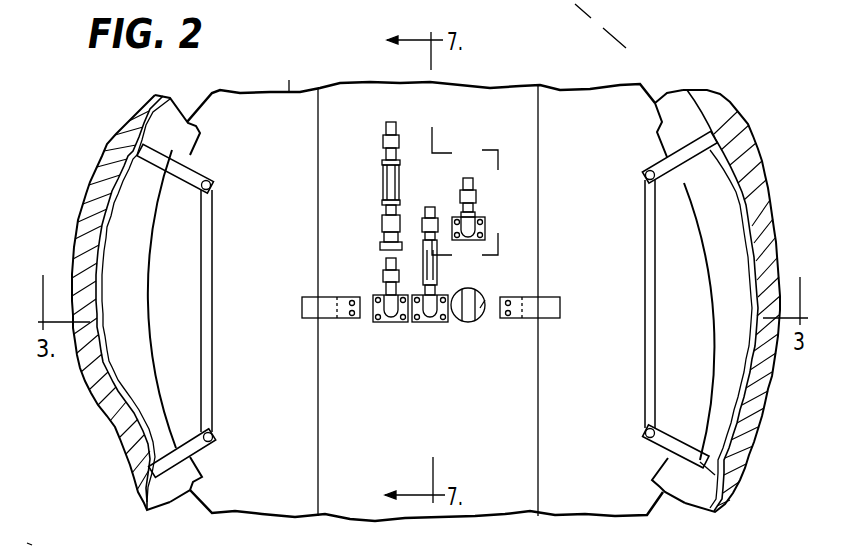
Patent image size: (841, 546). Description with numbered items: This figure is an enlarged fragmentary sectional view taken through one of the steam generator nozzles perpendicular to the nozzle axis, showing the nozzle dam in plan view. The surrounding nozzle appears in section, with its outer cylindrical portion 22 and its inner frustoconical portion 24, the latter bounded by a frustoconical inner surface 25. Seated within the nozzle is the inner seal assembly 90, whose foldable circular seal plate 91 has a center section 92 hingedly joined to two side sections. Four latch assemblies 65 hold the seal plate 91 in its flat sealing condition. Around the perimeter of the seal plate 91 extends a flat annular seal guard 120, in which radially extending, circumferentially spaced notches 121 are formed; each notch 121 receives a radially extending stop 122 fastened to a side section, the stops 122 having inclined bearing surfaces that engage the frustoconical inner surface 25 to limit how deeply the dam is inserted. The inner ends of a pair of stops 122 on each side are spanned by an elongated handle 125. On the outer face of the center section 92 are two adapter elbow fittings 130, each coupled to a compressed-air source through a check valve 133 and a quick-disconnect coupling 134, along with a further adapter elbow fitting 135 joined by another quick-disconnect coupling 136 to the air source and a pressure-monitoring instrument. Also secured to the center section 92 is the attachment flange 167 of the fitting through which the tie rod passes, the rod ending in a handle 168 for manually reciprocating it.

The outer cylindrical portion 22 is at (425, 260).
The inner frustoconical portion 24 is at (740, 138).
The frustoconical inner surface 25 is at (674, 93).
The latch assemblies 65 is at (310, 295).
The inner seal assembly 90 is at (289, 80).
The seal plate 91 is at (512, 85).
The center section 92 is at (373, 102).
The seal guard 120 is at (735, 292).
The notches 121 is at (700, 462).
The stops 122 is at (160, 160).
The handle 125 is at (210, 374).
The adapter elbow fittings 130 is at (428, 324).
The check valve 133 is at (385, 182).
The quick-disconnect coupling 134 is at (380, 245).
The adapter elbow fitting 135 is at (485, 227).
The quick-disconnect coupling 136 is at (475, 187).
The attachment flange 167 is at (482, 300).
The handle 168 is at (468, 324).